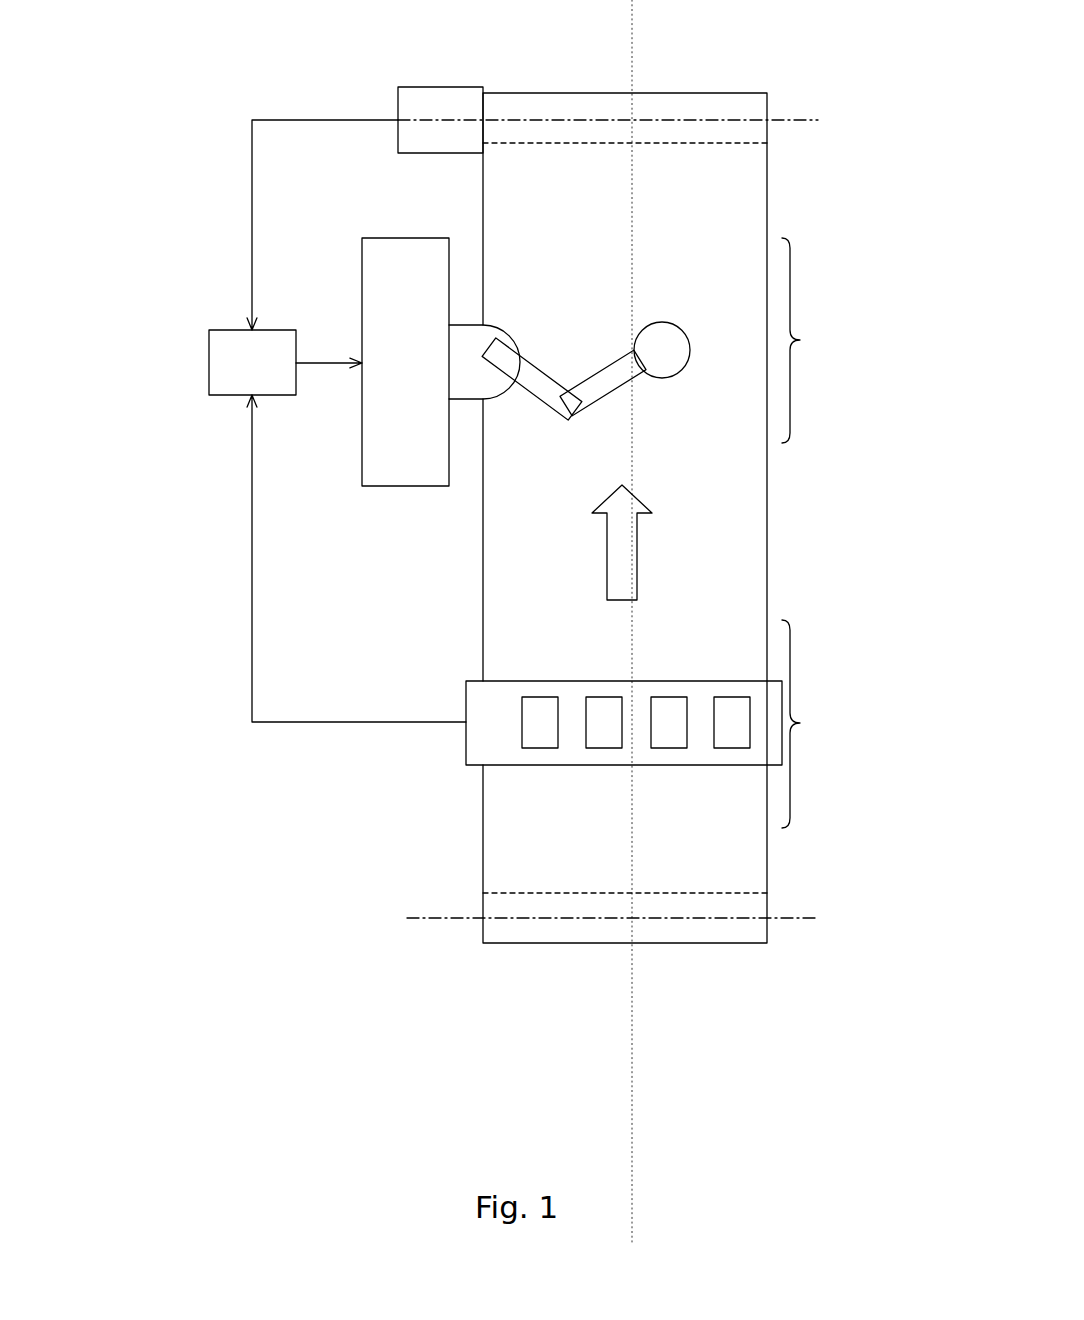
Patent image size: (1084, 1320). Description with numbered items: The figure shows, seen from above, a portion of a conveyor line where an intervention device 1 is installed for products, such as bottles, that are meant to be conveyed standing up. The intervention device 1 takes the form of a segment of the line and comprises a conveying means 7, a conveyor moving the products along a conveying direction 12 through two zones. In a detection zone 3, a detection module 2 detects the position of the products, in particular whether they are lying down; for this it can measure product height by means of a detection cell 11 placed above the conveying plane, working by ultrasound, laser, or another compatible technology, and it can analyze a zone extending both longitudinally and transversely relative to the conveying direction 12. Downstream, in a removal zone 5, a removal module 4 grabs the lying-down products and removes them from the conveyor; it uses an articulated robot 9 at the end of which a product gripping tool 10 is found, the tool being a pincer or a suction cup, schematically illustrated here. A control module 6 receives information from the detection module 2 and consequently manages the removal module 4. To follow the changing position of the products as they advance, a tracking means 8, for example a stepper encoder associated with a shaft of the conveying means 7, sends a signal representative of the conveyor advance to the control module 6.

The intervention device 1 is at (300, 813).
The detection module 2 is at (492, 748).
The detection zone 3 is at (815, 724).
The removal module 4 is at (334, 492).
The removal zone 5 is at (814, 340).
The control module 6 is at (244, 390).
The conveying means 7 is at (711, 533).
The tracking means 8 is at (467, 89).
The articulated robot 9 is at (610, 388).
The product gripping tool 10 is at (677, 331).
The detection cell 11 is at (742, 736).
The conveying direction 12 is at (645, 548).